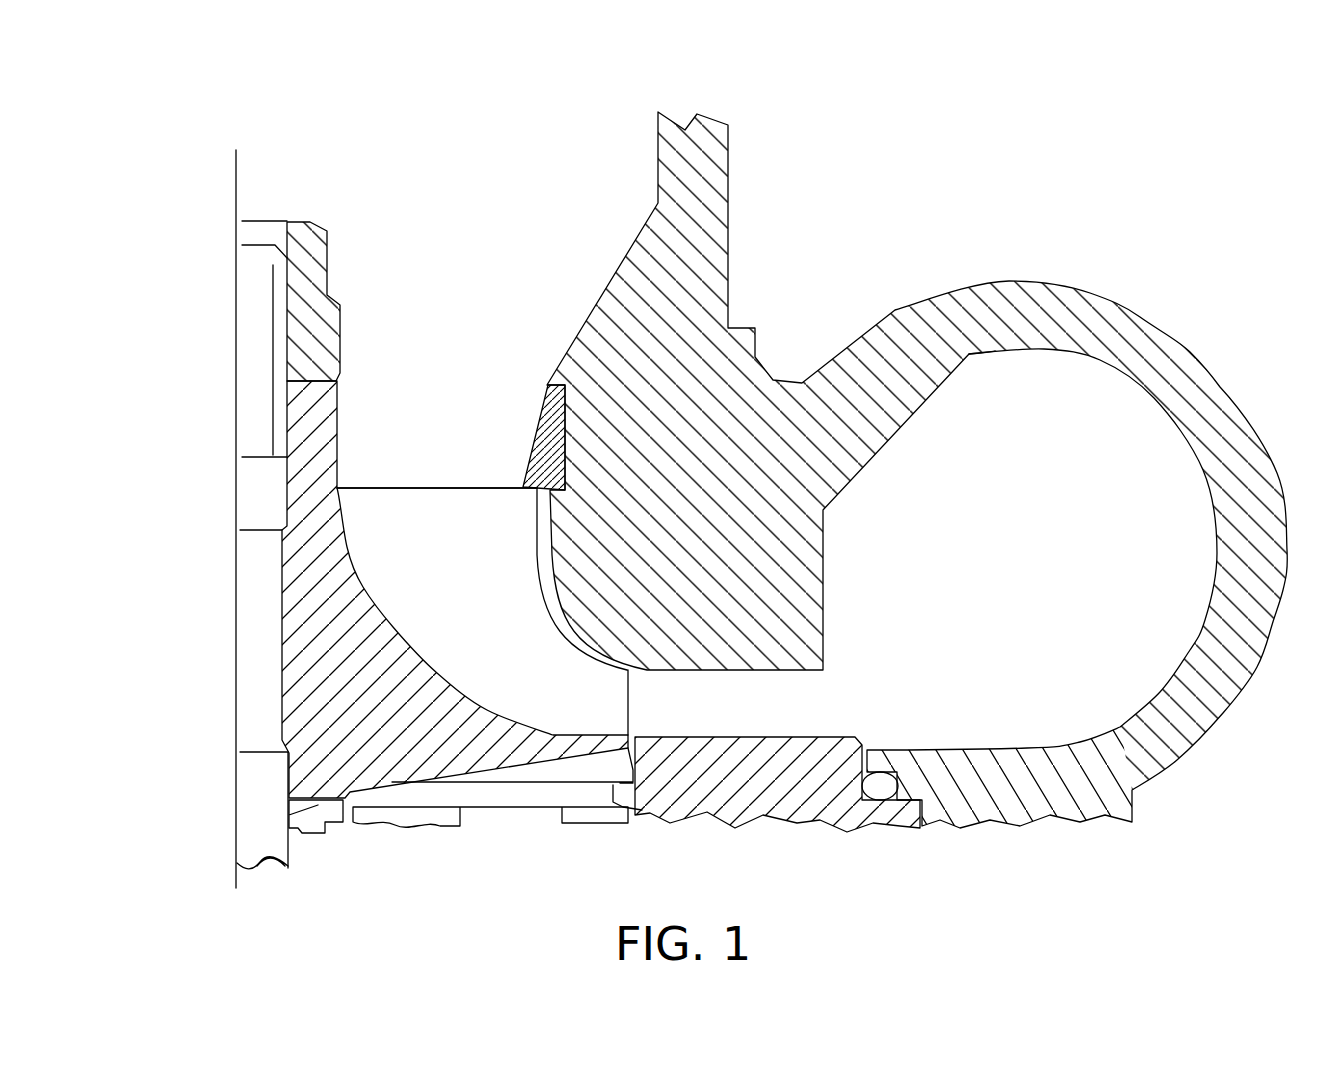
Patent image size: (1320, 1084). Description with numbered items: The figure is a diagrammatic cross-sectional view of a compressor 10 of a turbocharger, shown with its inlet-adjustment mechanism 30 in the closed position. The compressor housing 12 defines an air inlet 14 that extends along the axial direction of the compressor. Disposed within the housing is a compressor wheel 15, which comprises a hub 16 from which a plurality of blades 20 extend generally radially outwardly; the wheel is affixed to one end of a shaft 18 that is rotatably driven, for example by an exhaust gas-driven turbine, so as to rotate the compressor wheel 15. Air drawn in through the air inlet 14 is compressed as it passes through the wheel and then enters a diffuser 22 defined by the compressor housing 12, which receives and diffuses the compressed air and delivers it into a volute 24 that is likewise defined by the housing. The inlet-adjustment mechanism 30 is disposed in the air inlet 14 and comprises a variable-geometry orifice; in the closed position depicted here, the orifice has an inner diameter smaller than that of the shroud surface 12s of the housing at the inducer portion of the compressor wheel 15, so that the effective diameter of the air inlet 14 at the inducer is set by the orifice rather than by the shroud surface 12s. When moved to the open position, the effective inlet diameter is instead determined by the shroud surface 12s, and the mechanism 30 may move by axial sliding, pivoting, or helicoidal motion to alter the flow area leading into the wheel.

The compressor 10 is at (372, 213).
The compressor housing 12 is at (648, 235).
The shroud surface 12s is at (550, 512).
The air inlet 14 is at (483, 450).
The compressor wheel 15 is at (443, 525).
The hub 16 is at (318, 622).
The shaft 18 is at (260, 821).
The blades 20 is at (455, 618).
The diffuser 22 is at (698, 700).
The volute 24 is at (1024, 481).
The inlet-adjustment mechanism 30 is at (532, 475).